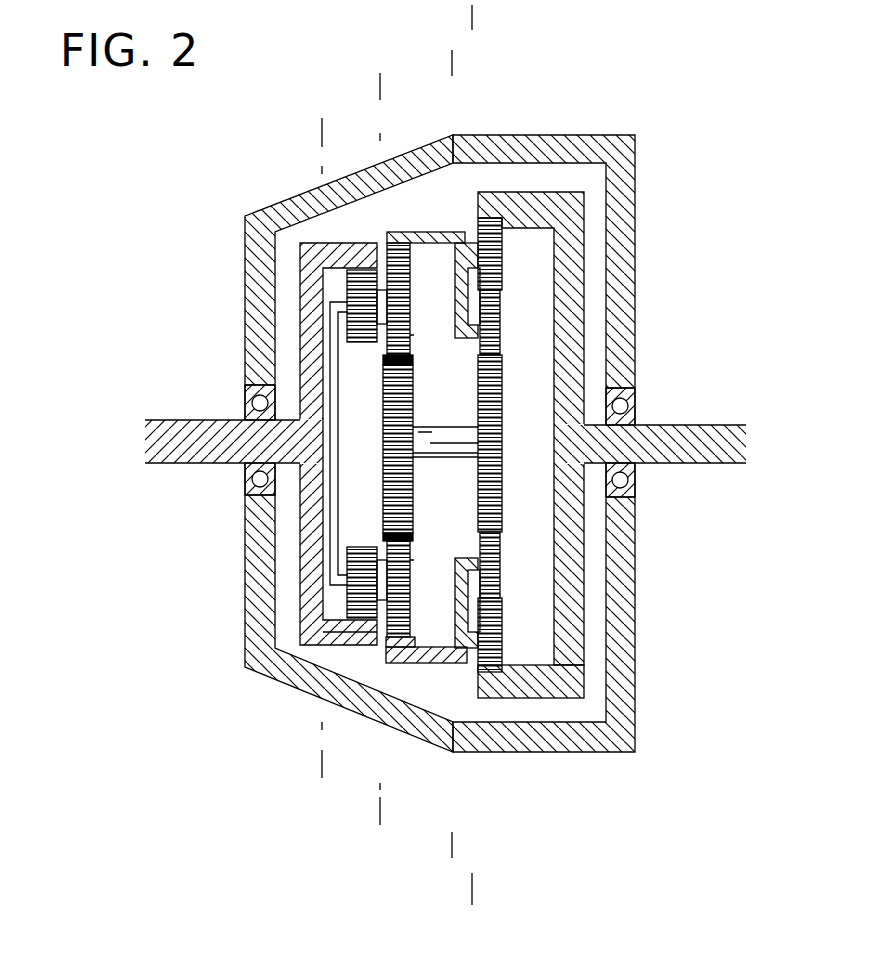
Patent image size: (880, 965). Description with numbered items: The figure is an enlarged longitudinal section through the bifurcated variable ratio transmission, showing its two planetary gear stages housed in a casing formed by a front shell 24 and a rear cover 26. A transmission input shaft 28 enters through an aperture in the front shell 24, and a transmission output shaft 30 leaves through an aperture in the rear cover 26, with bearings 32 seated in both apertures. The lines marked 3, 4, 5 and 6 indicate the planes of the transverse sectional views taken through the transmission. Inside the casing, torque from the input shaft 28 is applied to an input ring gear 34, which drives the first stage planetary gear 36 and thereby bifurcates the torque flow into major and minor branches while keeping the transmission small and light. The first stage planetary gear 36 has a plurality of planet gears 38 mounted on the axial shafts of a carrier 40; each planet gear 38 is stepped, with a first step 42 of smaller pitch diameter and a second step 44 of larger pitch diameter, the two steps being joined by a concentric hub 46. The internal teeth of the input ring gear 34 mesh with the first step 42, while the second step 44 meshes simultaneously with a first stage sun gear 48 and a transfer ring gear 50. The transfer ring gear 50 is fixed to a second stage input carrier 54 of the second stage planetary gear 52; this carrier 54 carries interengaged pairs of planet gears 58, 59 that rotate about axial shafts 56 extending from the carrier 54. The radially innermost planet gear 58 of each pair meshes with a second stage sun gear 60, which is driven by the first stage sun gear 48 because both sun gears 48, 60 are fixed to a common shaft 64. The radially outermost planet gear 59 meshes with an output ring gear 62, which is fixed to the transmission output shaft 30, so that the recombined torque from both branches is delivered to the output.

The section line 3- 3 is at (315, 133).
The section line 4- 4 is at (373, 88).
The section line 5- 5 is at (445, 62).
The section line 6- 6 is at (465, 18).
The front shell 24 is at (262, 238).
The rear cover 26 is at (625, 250).
The transmission input shaft 28 is at (203, 443).
The transmission output shaft 30 is at (704, 455).
The bearings 32 is at (253, 398).
The input ring gear 34 is at (300, 645).
The first stage planetary gear 36 is at (398, 222).
The planet gears 38 is at (416, 334).
The carrier 40 is at (348, 488).
The first step 42 is at (358, 542).
The second step 44 is at (397, 320).
The concentric hub 46 is at (337, 632).
The first stage sun gear 48 is at (413, 505).
The transfer ring gear 50 is at (395, 660).
The second stage planetary gear 52 is at (512, 183).
The second stage input carrier 54 is at (452, 600).
The axial shafts 56 is at (480, 560).
The radially innermost planet gear 58 is at (500, 342).
The radially outermost planet gear 59 is at (500, 278).
The second stage sun gear 60 is at (500, 420).
The output ring gear 62 is at (545, 692).
The common shaft 64 is at (455, 432).